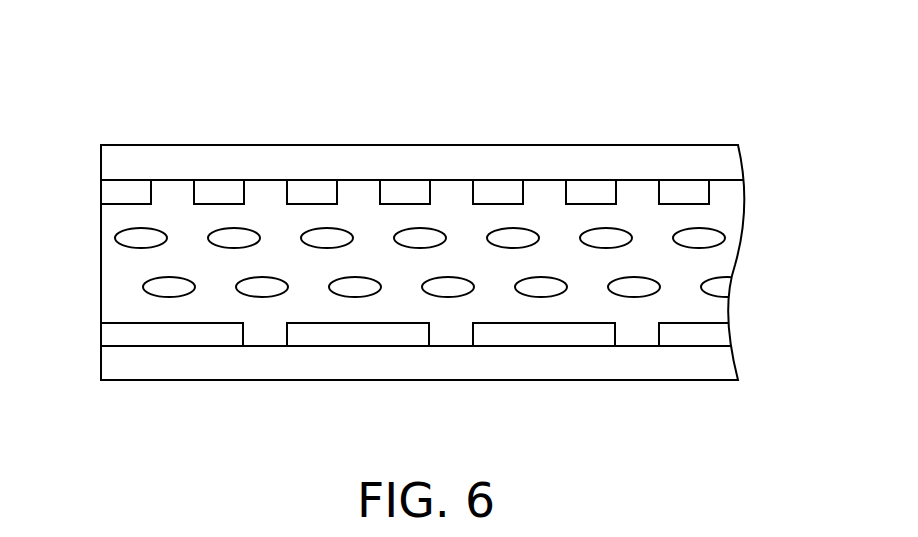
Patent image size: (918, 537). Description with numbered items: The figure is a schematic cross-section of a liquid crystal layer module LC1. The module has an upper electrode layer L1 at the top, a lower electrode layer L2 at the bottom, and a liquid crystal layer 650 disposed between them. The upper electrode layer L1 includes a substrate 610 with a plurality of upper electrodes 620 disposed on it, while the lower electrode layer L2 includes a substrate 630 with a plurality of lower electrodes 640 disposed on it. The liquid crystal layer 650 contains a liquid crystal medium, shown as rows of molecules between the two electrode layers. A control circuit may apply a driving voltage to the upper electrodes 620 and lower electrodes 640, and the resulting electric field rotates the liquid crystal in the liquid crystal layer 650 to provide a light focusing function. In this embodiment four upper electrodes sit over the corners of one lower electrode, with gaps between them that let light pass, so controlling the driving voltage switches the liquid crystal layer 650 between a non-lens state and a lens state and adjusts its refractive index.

The liquid crystal layer module LC1 is at (690, 82).
The substrate 610 is at (728, 162).
The upper electrodes 620 is at (700, 193).
The substrate 630 is at (717, 363).
The lower electrodes 640 is at (715, 331).
The liquid crystal layer 650 is at (708, 263).
The upper electrode layer L1 is at (86, 145).
The lower electrode layer L2 is at (86, 323).